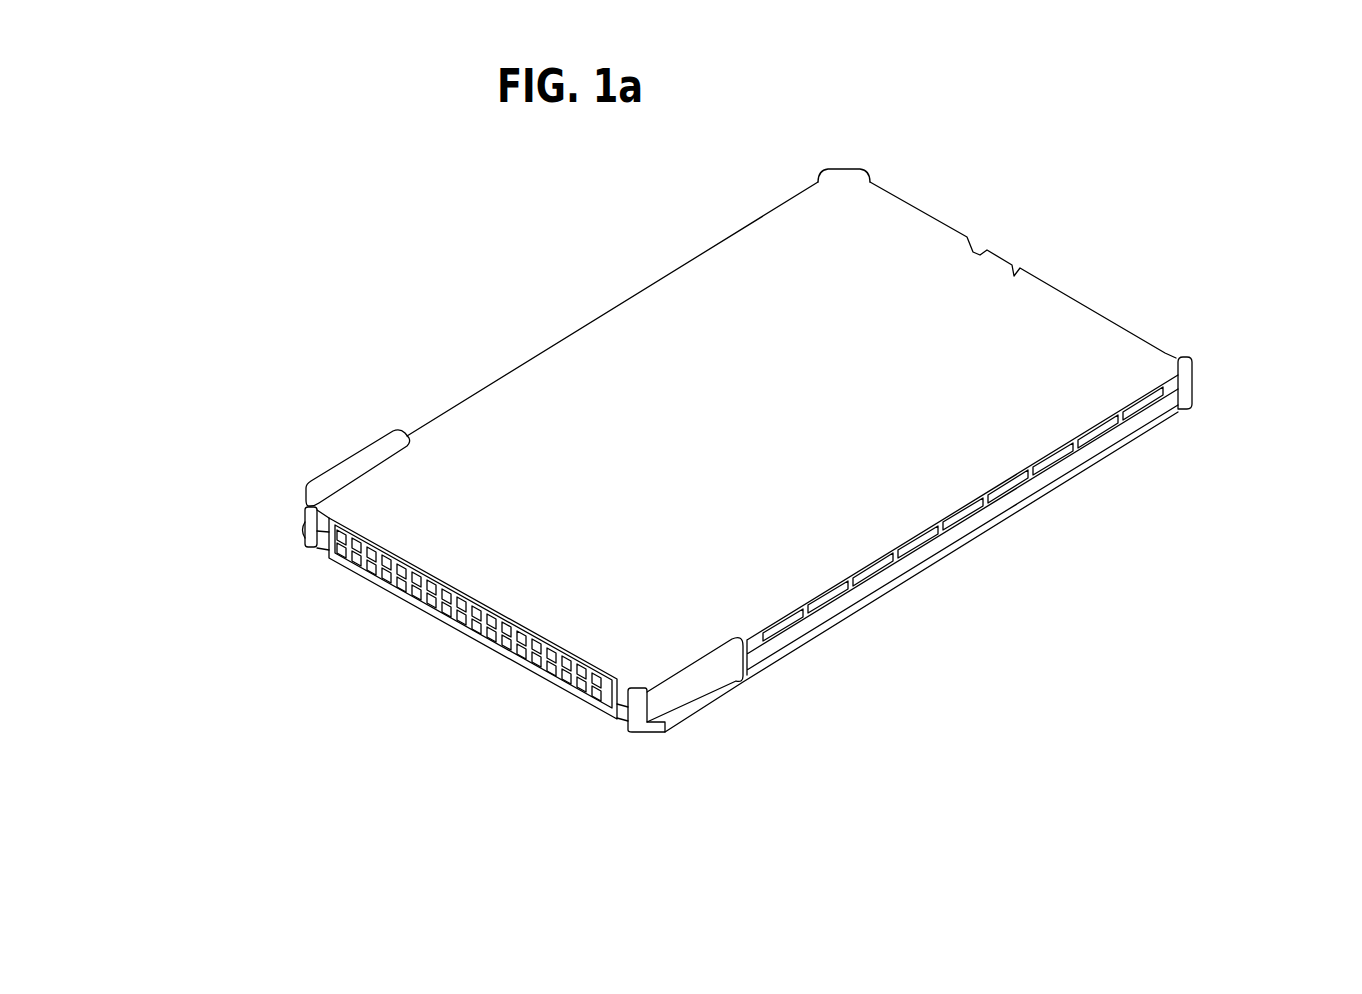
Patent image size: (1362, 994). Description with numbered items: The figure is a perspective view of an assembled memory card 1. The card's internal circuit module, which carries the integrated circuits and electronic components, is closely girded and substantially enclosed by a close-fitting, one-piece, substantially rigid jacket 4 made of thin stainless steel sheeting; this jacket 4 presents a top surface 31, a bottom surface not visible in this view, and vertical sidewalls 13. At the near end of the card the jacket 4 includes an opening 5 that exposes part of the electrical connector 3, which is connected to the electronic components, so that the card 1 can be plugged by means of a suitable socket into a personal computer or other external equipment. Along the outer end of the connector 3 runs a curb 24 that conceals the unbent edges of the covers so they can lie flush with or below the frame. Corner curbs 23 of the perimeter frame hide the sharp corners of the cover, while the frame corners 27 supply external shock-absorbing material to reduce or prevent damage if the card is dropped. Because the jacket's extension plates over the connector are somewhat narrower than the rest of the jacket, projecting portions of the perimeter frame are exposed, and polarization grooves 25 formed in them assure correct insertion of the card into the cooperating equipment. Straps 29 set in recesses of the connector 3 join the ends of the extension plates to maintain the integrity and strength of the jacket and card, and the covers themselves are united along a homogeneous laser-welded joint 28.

The memory card 1 is at (597, 287).
The electrical connector 3 is at (382, 582).
The jacket 4 is at (1058, 412).
The opening 5 is at (437, 627).
The vertical sidewalls 13 is at (1023, 483).
The corner curbs 23 is at (862, 172).
The curb 24 is at (540, 650).
The polarization grooves 25 is at (305, 522).
The frame corners 27 is at (1193, 368).
The joint 28 is at (912, 573).
The straps 29 is at (306, 547).
The top surface 31 is at (983, 327).